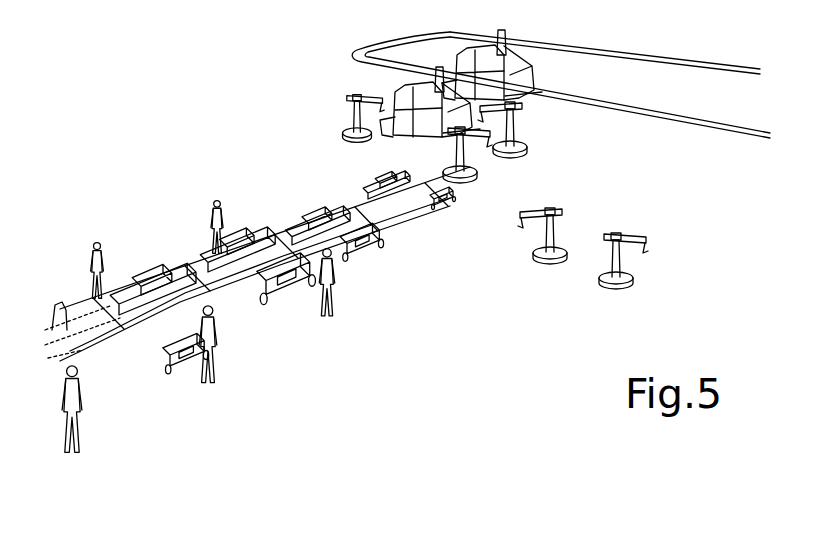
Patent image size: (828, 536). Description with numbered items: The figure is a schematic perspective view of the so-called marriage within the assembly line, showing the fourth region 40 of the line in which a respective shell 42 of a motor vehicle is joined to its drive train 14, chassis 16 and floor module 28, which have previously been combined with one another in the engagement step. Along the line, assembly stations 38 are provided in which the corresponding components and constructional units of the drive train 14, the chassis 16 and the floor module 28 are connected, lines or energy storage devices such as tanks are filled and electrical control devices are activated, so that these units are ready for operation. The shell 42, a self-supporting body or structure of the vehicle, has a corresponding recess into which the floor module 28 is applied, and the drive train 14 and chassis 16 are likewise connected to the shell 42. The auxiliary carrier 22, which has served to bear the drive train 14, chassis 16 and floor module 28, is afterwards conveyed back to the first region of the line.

The drive train 14 is at (279, 209).
The chassis 16 is at (265, 203).
The auxiliary carrier 22 is at (290, 282).
The floor module 28 is at (279, 209).
The assembly stations 38 is at (257, 257).
The fourth region 40 is at (302, 113).
The shell 42 is at (383, 93).